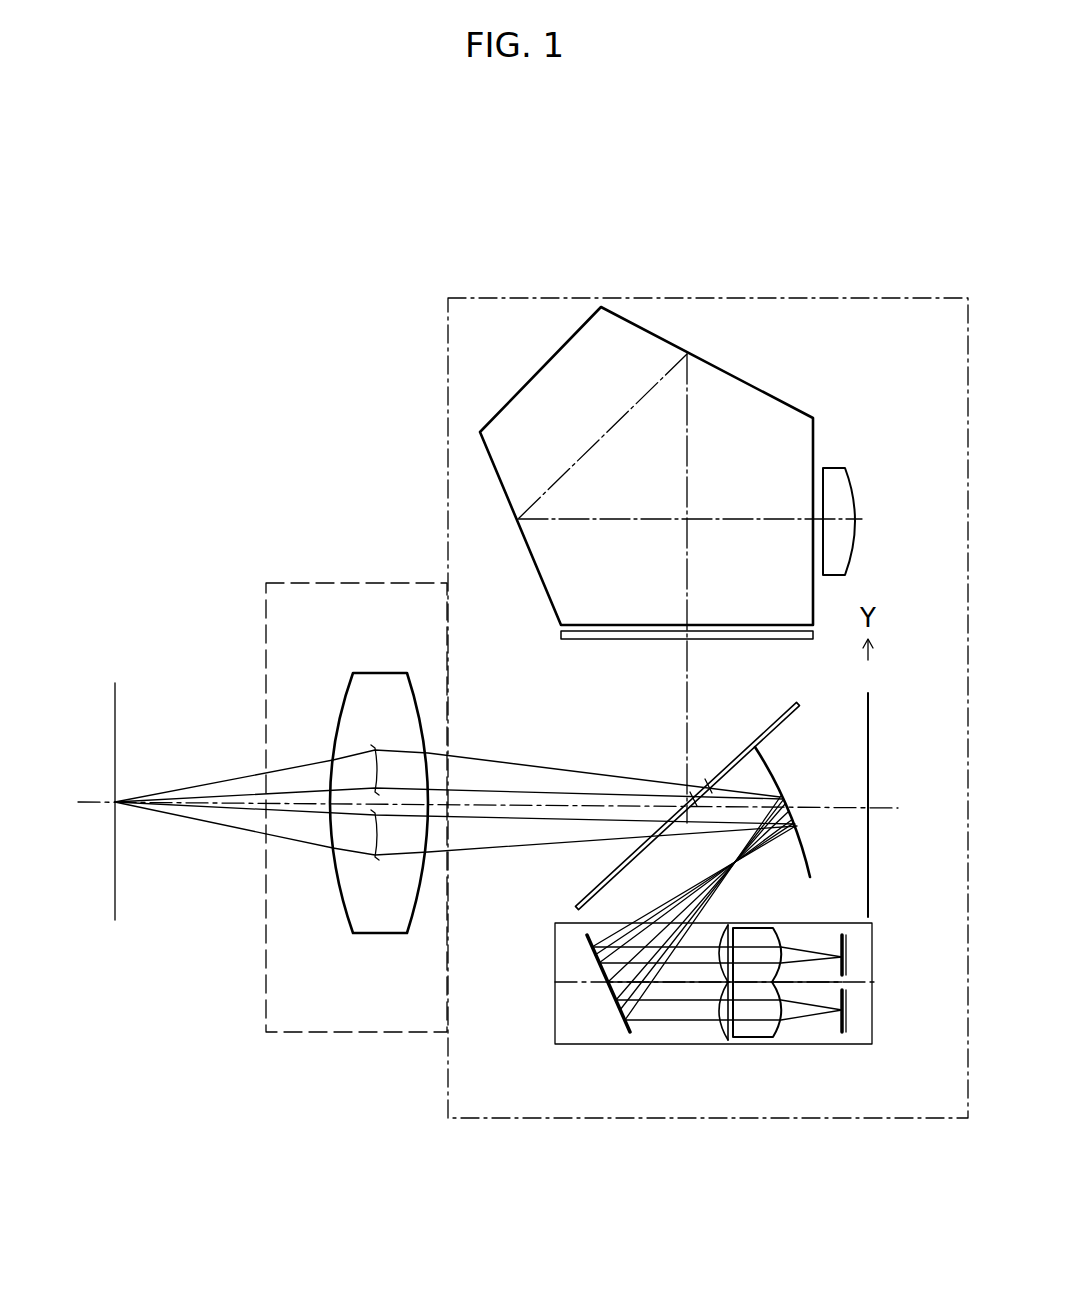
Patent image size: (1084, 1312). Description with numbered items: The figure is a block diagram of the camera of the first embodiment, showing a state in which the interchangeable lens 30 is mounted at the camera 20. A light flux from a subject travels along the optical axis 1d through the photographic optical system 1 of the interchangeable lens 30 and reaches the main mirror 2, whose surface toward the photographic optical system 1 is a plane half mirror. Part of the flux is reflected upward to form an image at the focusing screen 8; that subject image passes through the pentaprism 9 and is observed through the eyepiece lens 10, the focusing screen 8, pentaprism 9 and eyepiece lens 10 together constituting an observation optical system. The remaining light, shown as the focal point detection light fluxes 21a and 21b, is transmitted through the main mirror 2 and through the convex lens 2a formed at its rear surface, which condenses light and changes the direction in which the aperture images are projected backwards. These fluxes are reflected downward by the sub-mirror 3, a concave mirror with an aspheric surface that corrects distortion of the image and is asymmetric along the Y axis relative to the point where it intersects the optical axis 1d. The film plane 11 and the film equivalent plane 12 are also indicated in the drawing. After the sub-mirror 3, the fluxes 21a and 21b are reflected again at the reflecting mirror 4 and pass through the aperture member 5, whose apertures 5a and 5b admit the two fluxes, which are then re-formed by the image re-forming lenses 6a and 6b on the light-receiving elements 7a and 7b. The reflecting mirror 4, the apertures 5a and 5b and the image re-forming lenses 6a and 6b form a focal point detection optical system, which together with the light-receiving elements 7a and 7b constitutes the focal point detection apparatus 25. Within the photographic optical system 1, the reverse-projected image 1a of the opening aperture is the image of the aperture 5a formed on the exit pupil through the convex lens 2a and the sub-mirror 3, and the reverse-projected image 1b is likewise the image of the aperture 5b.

The photographic optical system 1 is at (373, 933).
The reverse-projected image of the opening aperture 1a is at (373, 760).
The reverse-projected image of the opening aperture 1b is at (375, 854).
The optical axis 1d is at (479, 802).
The main mirror 2 is at (588, 900).
The convex lens 2a is at (660, 852).
The sub-mirror 3 is at (765, 758).
The reflecting mirror 4 is at (586, 937).
The collimator lens 5 is at (766, 896).
The aperture 5a is at (713, 1012).
The aperture 5b is at (719, 938).
The image re-forming lens 6a is at (792, 1037).
The image re-forming lens 6b is at (787, 928).
The light-receiving element 7a is at (847, 1000).
The light-receiving element 7b is at (847, 947).
The focusing screen 8 is at (558, 630).
The pentaprism 9 is at (528, 548).
The eyepiece lens 10 is at (845, 478).
The film plane 11 is at (869, 776).
The film equivalent plane 12 is at (693, 907).
The camera 20 is at (756, 341).
The focal point detection light flux 21a is at (580, 772).
The focal point detection light flux 21b is at (568, 825).
The focal point detection apparatus 25 is at (573, 1041).
The interchangeable lens 30 is at (369, 604).